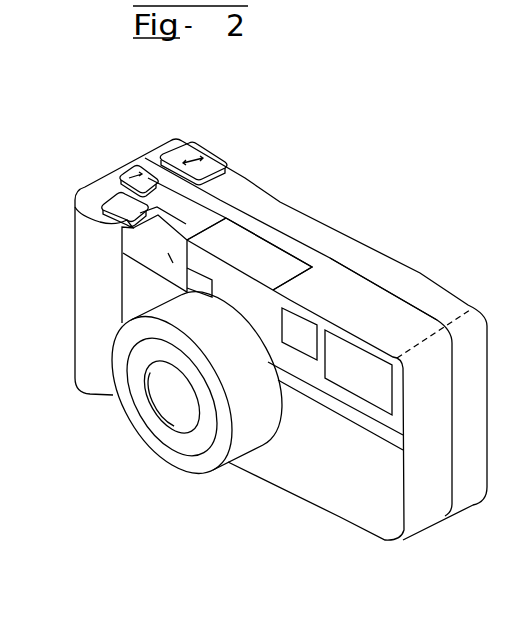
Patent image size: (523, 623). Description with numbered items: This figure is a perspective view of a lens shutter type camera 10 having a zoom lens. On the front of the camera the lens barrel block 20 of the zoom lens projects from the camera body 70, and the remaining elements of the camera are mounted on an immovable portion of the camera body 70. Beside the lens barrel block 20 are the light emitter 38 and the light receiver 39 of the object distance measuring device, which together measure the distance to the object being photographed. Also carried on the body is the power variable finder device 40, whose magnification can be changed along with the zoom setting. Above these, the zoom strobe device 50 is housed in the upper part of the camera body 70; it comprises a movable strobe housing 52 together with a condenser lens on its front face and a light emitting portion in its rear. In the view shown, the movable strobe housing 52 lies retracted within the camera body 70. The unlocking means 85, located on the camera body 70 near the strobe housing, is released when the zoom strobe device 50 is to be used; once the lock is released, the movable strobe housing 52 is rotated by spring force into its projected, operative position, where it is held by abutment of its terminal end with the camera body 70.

The camera 10 is at (340, 216).
The lens barrel block 20 is at (210, 463).
The light emitter 38 is at (132, 247).
The light receiver 39 is at (307, 347).
The power variable finder device 40 is at (355, 380).
The zoom strobe device 50 is at (266, 260).
The movable strobe housing 52 is at (228, 262).
The camera body 70 is at (343, 279).
The unlocking means 85 is at (205, 270).